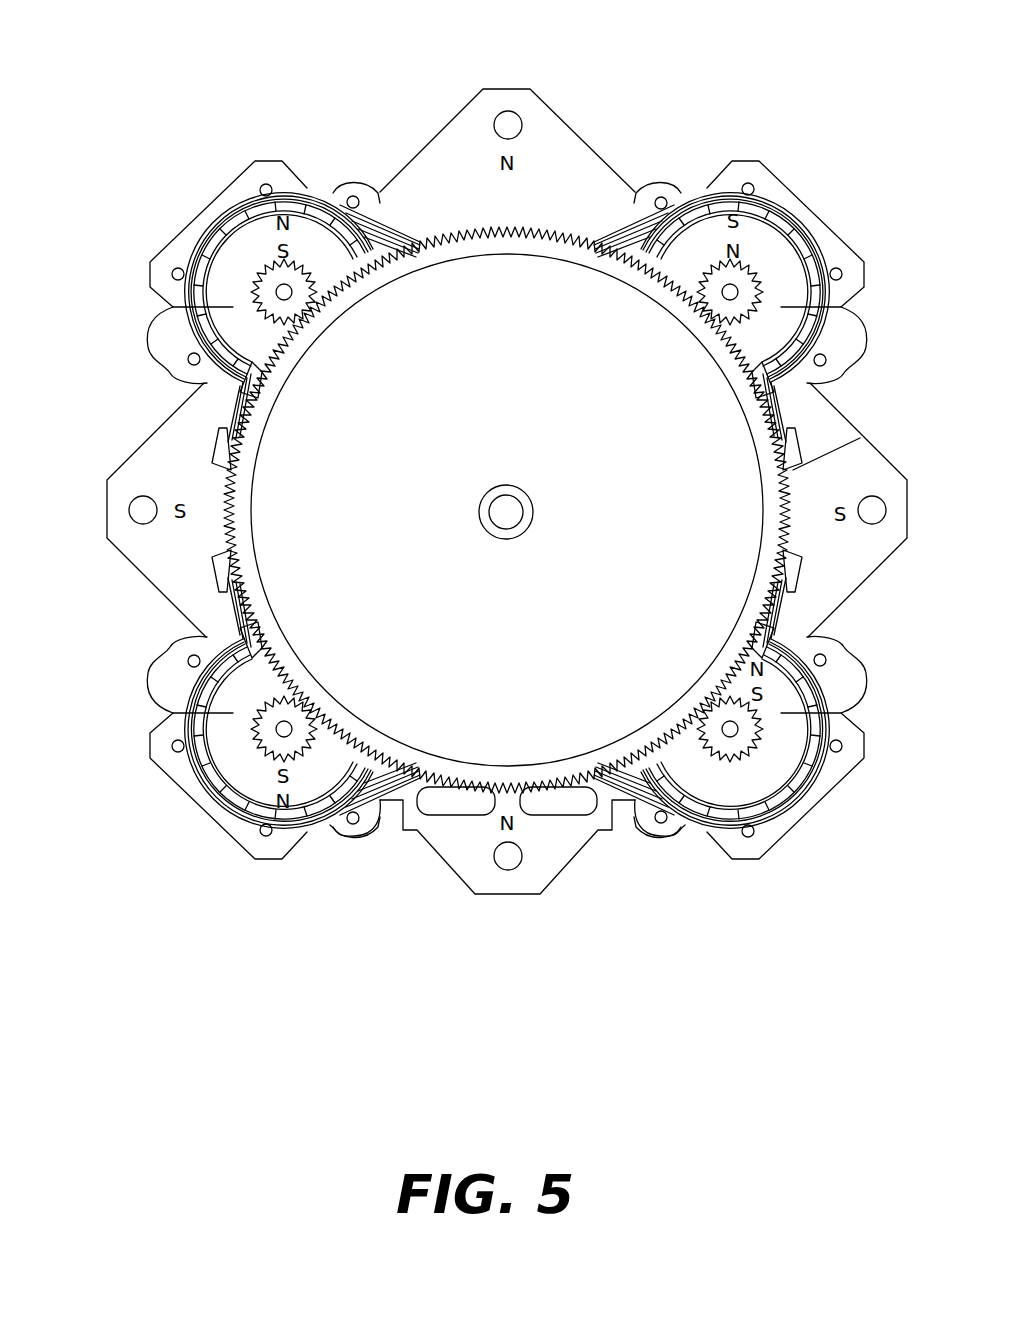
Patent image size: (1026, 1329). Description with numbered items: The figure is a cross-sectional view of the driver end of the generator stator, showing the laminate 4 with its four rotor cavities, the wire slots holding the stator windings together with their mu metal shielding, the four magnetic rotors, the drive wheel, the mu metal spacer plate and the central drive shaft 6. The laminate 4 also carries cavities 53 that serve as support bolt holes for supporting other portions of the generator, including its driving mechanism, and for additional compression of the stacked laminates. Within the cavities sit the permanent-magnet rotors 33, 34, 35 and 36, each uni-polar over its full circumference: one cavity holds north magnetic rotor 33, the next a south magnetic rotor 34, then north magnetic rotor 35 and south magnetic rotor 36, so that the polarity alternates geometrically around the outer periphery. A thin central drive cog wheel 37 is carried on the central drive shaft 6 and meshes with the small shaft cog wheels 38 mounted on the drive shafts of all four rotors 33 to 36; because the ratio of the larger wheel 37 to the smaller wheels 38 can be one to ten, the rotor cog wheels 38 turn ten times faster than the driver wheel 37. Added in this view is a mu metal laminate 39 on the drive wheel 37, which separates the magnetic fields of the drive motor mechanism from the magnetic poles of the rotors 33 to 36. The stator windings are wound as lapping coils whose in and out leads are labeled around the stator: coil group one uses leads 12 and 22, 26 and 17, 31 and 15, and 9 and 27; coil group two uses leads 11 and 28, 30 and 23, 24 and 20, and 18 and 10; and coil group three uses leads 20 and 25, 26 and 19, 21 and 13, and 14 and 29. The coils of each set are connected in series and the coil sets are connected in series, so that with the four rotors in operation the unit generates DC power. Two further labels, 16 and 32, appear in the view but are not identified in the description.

The central drive shaft 6 is at (506, 485).
The laminate 4 is at (506, 510).
The support bolt hole cavities 53 is at (508, 111).
The shaft cog wheels 38 is at (507, 510).
The coil group 1 lead 9 is at (387, 261).
The coil group 2 lead 10 is at (288, 241).
The coil group 2 lead 11 is at (275, 228).
The coil group 1 lead 12 is at (623, 261).
The coil group 3 lead 13 is at (243, 223).
The coil group 3 lead 14 is at (171, 408).
The coil group 1 lead 15 is at (287, 406).
The housing end 16 is at (289, 615).
The coil group 1 lead 17 is at (172, 612).
The coil group 2 lead 18 is at (243, 799).
The coil group 3 lead 19 is at (279, 785).
The coil lead 20 is at (294, 786).
The coil group 3 lead 21 is at (391, 759).
The coil group 1 lead 22 is at (623, 759).
The coil group 2 lead 23 is at (721, 786).
The coil group 2 lead 24 is at (735, 784).
The coil group 3 lead 25 is at (772, 797).
The coil lead 26 is at (838, 612).
The coil group 1 lead 27 is at (726, 408).
The coil group 2 lead 28 is at (843, 408).
The coil group 3 lead 29 is at (772, 223).
The coil group 2 lead 30 is at (730, 235).
The coil group 1 lead 31 is at (721, 233).
The housing end 32 is at (726, 614).
The north magnetic rotor 33 is at (142, 345).
The south magnetic rotor 34 is at (872, 345).
The north magnetic rotor 35 is at (872, 674).
The south magnetic rotor 36 is at (142, 674).
The central drive cog wheel 37 is at (860, 438).
The mu metal laminate 39 is at (793, 543).